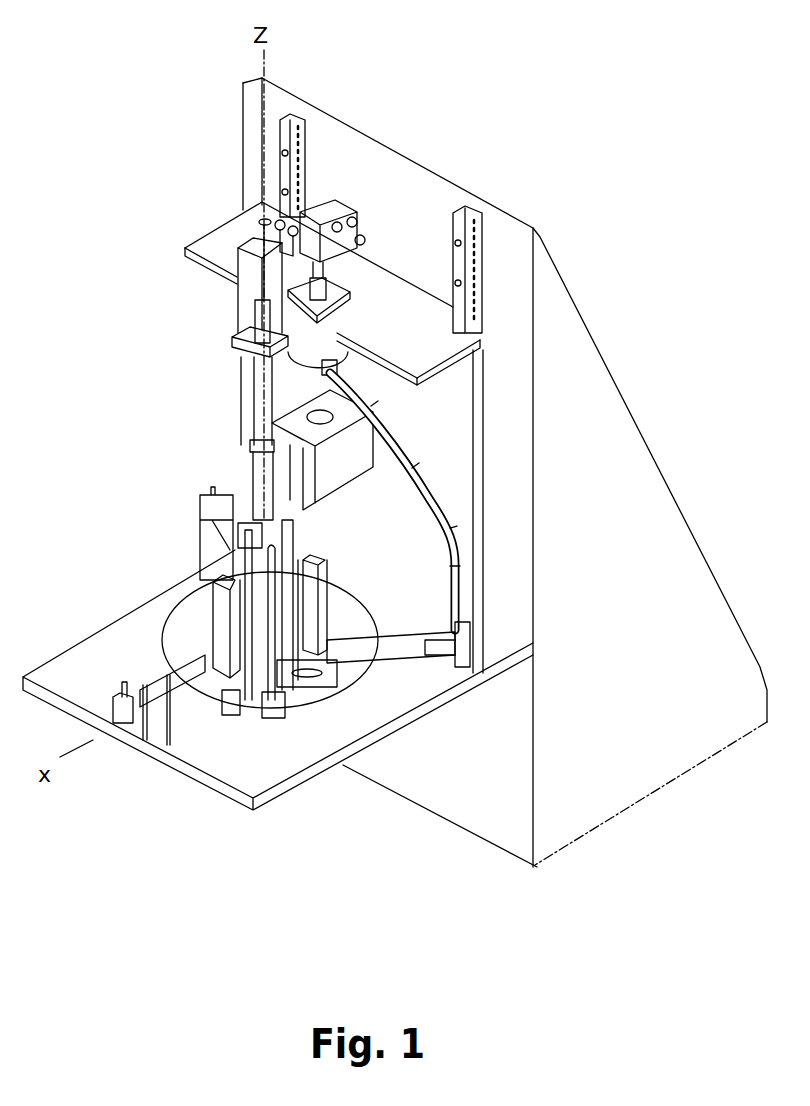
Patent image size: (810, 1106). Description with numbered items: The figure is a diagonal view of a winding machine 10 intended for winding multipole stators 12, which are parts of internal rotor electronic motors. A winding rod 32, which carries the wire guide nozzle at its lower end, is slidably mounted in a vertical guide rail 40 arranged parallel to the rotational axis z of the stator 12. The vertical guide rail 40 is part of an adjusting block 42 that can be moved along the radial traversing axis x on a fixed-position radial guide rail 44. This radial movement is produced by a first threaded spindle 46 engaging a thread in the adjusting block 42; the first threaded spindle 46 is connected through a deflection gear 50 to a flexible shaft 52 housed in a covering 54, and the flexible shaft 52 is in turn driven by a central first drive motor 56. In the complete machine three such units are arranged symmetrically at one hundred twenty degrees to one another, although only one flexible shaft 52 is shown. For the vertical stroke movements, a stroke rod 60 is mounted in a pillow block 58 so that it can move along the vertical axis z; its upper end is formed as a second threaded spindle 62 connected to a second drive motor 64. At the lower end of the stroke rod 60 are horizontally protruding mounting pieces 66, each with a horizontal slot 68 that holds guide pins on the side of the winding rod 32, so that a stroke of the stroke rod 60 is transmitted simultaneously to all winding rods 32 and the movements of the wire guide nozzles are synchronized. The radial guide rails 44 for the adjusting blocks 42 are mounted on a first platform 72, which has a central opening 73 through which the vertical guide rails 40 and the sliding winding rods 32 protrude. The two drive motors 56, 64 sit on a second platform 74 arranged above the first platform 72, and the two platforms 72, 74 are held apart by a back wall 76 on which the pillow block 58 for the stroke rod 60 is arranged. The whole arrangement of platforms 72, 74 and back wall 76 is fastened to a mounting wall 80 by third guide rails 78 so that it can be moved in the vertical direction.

The winding machine 10 is at (88, 168).
The stator 12 is at (316, 707).
The winding rod 32 is at (277, 633).
The vertical guide rail 40 is at (253, 600).
The adjusting block 42 is at (377, 660).
The radial guide rail 44 is at (433, 683).
The first threaded spindle 46 is at (528, 689).
The deflection gear 50 is at (465, 667).
The flexible shaft 52 is at (455, 550).
The covering 54 is at (540, 501).
The first drive motor 56 is at (323, 217).
The pillow block 58 is at (260, 483).
The stroke rod 60 is at (260, 440).
The second threaded spindle 62 is at (258, 390).
The second drive motor 64 is at (183, 255).
The mounting pieces 66 is at (230, 700).
The slot 68 is at (262, 712).
The first platform 72 is at (275, 773).
The central opening 73 is at (203, 643).
The second platform 74 is at (381, 293).
The back wall 76 is at (462, 467).
The third guide rails 78 is at (482, 218).
The mounting wall 80 is at (515, 256).